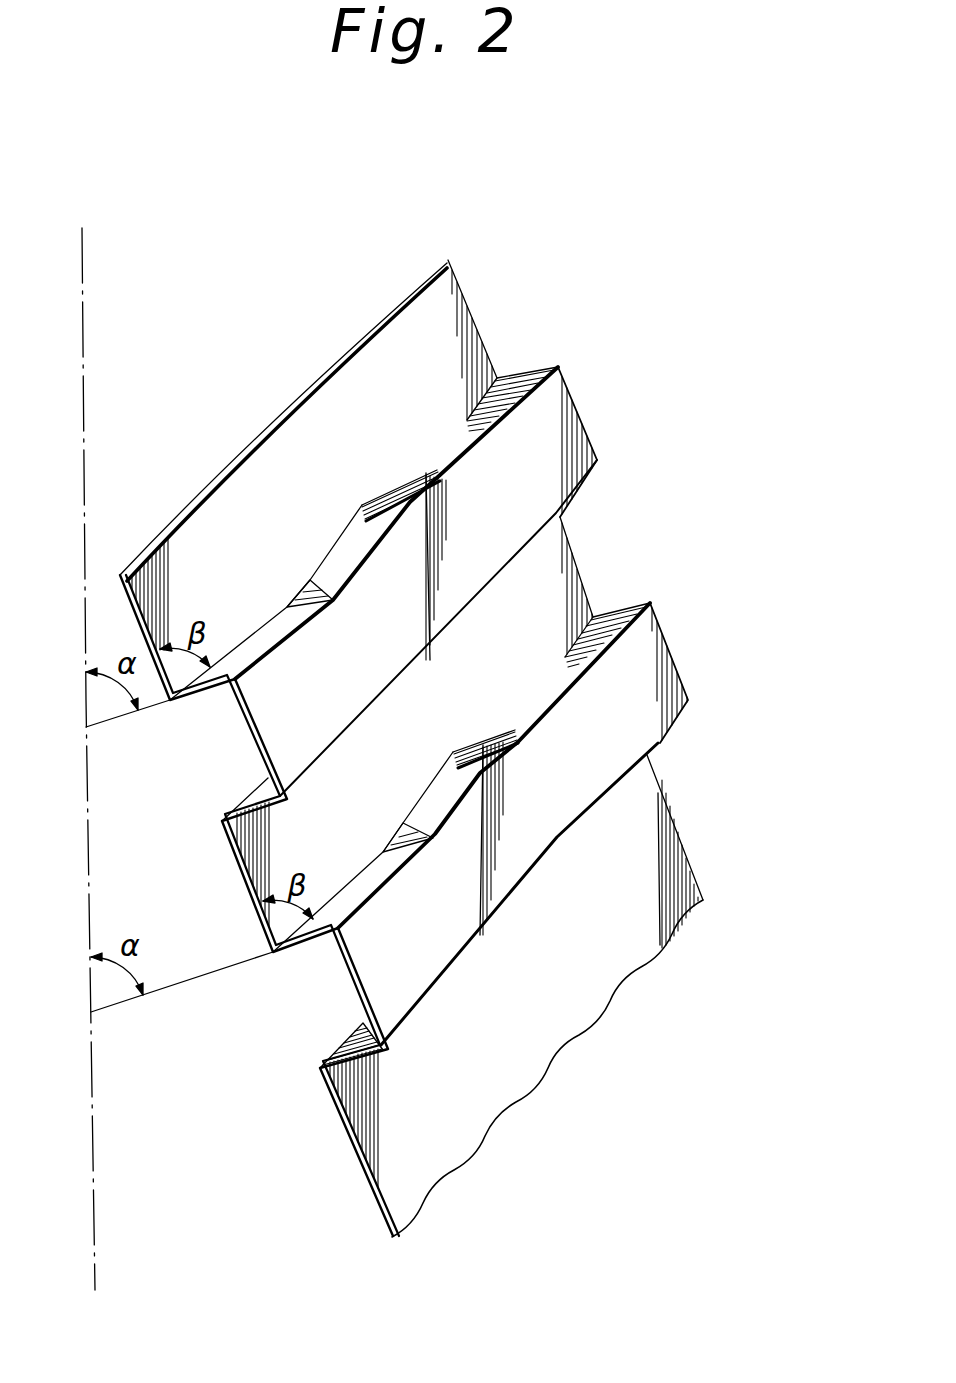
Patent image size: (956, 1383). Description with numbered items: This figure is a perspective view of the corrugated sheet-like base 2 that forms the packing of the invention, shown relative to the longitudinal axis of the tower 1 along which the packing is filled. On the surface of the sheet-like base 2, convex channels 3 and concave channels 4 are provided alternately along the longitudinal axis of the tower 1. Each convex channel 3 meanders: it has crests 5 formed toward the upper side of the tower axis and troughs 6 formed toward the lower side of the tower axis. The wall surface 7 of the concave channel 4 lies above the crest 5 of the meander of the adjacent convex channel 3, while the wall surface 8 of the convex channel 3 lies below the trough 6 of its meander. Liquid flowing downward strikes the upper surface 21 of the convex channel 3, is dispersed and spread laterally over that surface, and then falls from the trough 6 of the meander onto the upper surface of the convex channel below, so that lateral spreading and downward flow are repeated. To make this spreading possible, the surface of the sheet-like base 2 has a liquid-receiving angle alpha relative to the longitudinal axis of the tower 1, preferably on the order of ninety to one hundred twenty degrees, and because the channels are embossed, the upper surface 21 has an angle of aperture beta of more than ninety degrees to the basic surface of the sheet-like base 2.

The longitudinal axis of the tower 1 is at (84, 316).
The corrugated sheet-like base 2 is at (162, 521).
The convex channel 3 is at (567, 428).
The concave channel 4 is at (470, 352).
The crest of the meander of the convex channel 5 is at (388, 518).
The trough of the meander of the convex channel 6 is at (313, 607).
The wall surface of the concave channel 7 is at (323, 487).
The wall surface of the convex channel 8 is at (357, 608).
The upper surface of the convex channel 21 is at (500, 392).